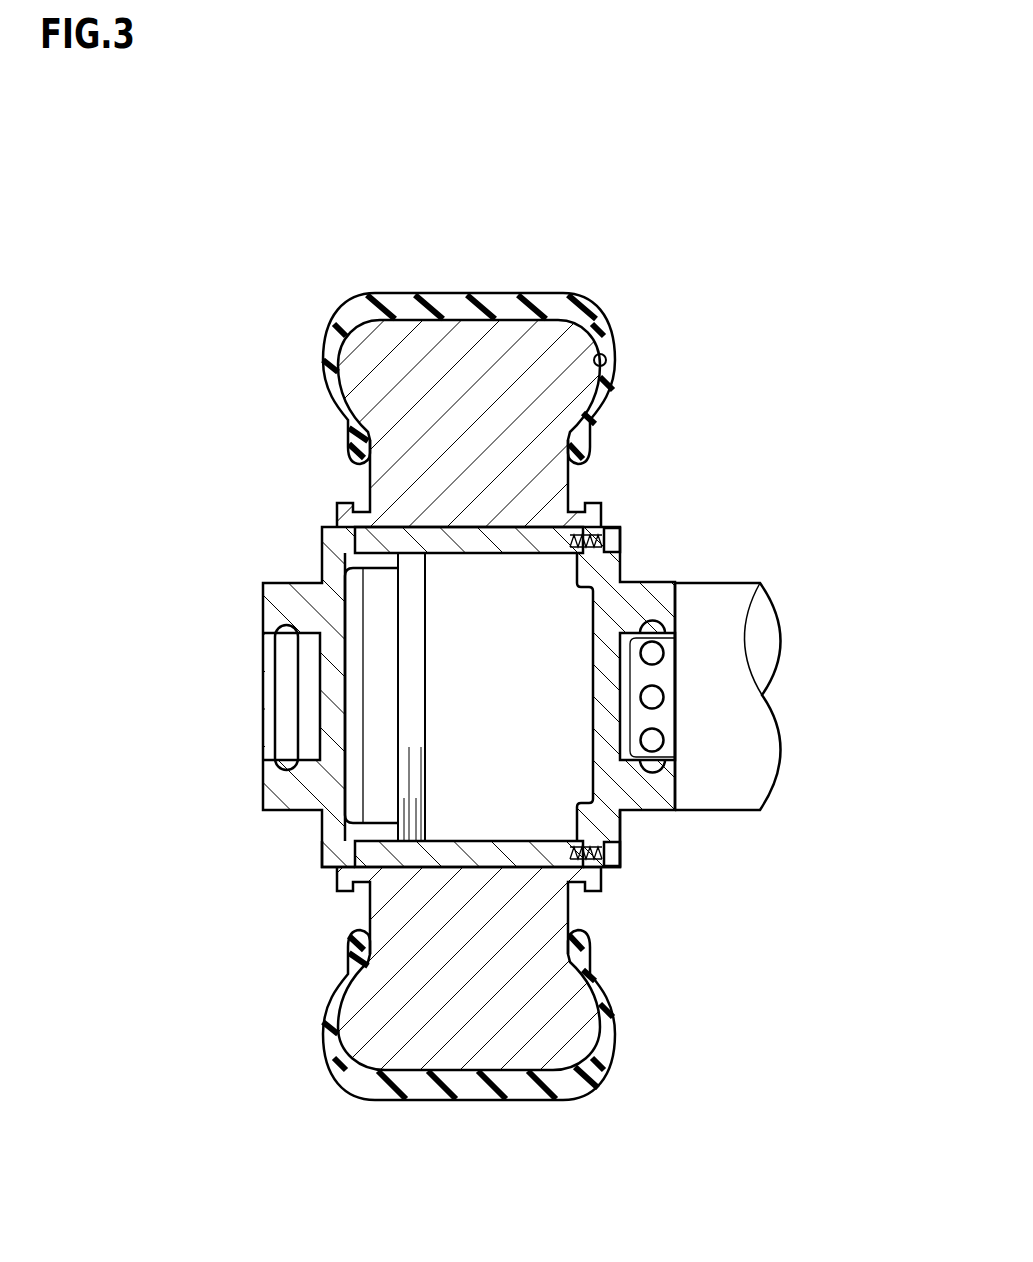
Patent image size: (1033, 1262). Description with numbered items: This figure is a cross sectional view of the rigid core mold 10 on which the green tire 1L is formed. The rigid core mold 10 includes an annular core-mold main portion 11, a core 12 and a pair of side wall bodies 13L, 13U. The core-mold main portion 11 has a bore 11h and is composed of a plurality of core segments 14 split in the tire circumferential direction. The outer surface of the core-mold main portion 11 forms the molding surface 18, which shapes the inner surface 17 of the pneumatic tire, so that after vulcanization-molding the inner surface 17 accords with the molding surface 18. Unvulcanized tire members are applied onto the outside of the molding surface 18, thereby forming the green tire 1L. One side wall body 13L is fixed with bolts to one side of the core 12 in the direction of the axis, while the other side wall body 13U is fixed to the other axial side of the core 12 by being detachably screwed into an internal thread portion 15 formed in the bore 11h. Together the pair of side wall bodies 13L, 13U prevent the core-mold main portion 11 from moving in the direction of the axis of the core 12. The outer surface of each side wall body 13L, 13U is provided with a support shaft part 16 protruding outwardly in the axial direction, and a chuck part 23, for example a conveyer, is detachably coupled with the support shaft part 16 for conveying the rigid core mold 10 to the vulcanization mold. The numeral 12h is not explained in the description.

The rigid core mold 10 is at (241, 797).
The core-mold main portion 11 is at (477, 420).
The core segments 14 is at (390, 415).
The bore 11h is at (388, 538).
The core 12 is at (540, 858).
The inner sleeve / hole 12h is at (443, 557).
The side wall body 13U is at (337, 852).
The side wall body 13L is at (597, 828).
The internal thread portion 15 is at (413, 803).
The support shaft part 16 is at (657, 582).
The inner surface 17 is at (608, 375).
The molding surface 18 is at (400, 318).
The green tire 1L is at (477, 365).
The chuck part 23 is at (730, 631).